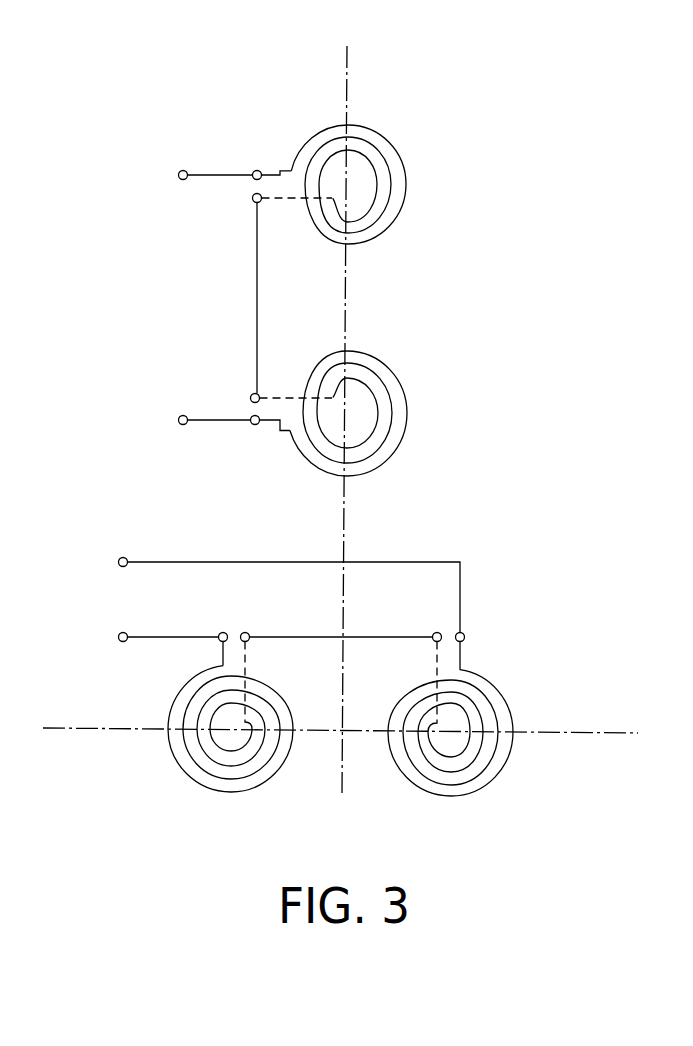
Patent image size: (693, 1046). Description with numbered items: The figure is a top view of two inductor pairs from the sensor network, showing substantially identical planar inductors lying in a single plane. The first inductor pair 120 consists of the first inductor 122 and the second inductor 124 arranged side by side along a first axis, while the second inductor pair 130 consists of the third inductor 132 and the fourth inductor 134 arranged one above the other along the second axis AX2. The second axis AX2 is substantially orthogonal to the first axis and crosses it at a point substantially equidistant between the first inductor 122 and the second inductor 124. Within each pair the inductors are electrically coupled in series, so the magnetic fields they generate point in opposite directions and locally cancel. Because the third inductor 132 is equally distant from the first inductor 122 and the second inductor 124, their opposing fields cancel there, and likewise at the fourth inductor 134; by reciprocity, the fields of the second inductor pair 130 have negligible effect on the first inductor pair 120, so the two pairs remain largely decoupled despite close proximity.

The first inductor pair 120 is at (536, 662).
The first inductor 122 is at (495, 778).
The second inductor 124 is at (273, 777).
The second inductor pair 130 is at (546, 132).
The third inductor 132 is at (403, 164).
The fourth inductor 134 is at (405, 398).
The second axis AX2 is at (350, 62).